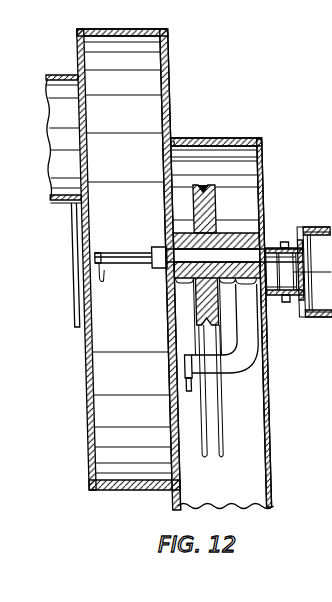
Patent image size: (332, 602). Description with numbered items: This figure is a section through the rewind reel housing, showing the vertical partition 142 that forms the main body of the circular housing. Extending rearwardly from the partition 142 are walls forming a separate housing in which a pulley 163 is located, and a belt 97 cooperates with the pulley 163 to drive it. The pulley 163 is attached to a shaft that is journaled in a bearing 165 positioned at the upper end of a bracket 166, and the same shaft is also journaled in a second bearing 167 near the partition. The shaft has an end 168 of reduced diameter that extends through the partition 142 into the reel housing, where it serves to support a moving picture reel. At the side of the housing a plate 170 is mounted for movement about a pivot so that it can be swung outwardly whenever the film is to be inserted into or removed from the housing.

The vertical partition 142 is at (169, 82).
The belt 97 is at (206, 190).
The pulley 163 is at (207, 212).
The bearing 165 is at (257, 240).
The bracket 166 is at (240, 352).
The bearing 167 is at (166, 273).
The reduced-diameter shaft end 168 is at (142, 239).
The plate 170 is at (270, 297).